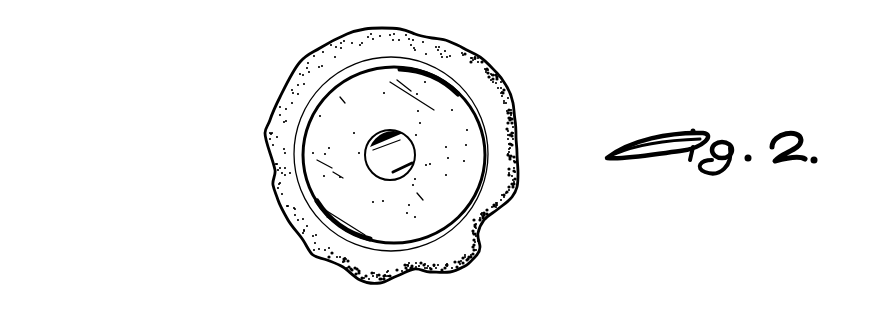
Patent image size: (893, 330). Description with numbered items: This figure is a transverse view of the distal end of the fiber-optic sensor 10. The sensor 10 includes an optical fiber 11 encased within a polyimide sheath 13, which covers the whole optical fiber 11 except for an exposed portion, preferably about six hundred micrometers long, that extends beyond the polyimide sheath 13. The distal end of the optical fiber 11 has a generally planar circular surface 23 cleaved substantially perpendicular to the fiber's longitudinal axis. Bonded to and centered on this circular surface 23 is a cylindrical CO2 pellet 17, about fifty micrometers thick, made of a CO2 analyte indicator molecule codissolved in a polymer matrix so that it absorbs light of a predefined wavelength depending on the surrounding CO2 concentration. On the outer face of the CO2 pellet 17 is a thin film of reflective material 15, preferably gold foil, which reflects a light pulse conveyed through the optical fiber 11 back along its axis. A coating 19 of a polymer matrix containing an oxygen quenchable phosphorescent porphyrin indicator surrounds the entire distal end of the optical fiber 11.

The fiber-optic sensor 10 is at (190, 178).
The optical fiber 11 is at (414, 248).
The polyimide sheath 13 is at (470, 259).
The reflective material 15 is at (415, 162).
The CO2 pellet 17 is at (364, 177).
The coating 19 is at (510, 88).
The circular surface 23 is at (460, 140).